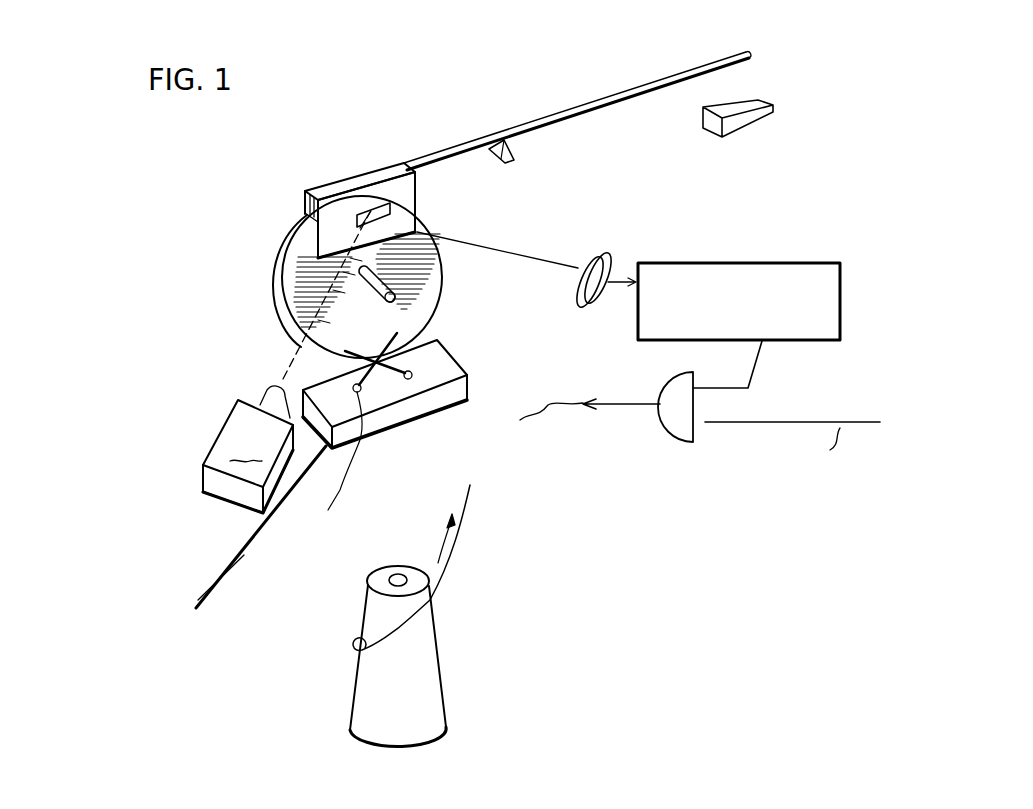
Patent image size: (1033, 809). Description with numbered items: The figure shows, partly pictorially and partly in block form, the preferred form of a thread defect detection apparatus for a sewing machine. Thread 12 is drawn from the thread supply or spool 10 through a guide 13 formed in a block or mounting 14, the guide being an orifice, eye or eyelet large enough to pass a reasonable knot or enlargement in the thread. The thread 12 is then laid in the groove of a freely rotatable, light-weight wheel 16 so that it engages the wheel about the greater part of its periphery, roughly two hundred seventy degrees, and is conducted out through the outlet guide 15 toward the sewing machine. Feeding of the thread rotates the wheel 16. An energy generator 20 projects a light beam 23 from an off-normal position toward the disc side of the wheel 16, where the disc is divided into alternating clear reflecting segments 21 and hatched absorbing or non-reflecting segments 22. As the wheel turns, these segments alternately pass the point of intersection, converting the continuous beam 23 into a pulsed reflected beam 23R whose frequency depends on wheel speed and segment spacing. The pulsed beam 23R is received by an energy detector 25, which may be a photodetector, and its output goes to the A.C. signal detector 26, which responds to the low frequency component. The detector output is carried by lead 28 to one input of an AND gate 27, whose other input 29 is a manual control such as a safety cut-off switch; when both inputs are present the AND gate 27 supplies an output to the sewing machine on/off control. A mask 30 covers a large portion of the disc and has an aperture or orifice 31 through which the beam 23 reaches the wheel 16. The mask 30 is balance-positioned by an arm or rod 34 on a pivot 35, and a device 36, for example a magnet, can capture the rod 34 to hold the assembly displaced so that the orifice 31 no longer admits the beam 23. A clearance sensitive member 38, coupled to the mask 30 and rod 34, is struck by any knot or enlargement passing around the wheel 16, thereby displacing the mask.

The thread supply or spool 10 is at (440, 664).
The thread 12 is at (214, 606).
The guide 13 is at (412, 373).
The block or mounting 14 is at (470, 388).
The outlet guide 15 is at (337, 464).
The wheel 16 is at (273, 290).
The energy generator 20 is at (203, 450).
The reflecting segments 21 is at (367, 320).
The non-reflecting segments 22 is at (423, 278).
The energy beam 23 is at (285, 375).
The pulsed beam 23R is at (506, 251).
The energy detector 25 is at (608, 235).
The A.C. signal detector 26 is at (760, 263).
The AND gate 27 is at (643, 402).
The lead 28 is at (755, 376).
The manual control input 29 is at (772, 423).
The mask 30 is at (305, 191).
The aperture or orifice 31 is at (366, 204).
The arm or rod 34 is at (517, 120).
The pivot 35 is at (518, 153).
The capturing device 36 is at (770, 120).
The clearance sensitive member 38 is at (305, 214).